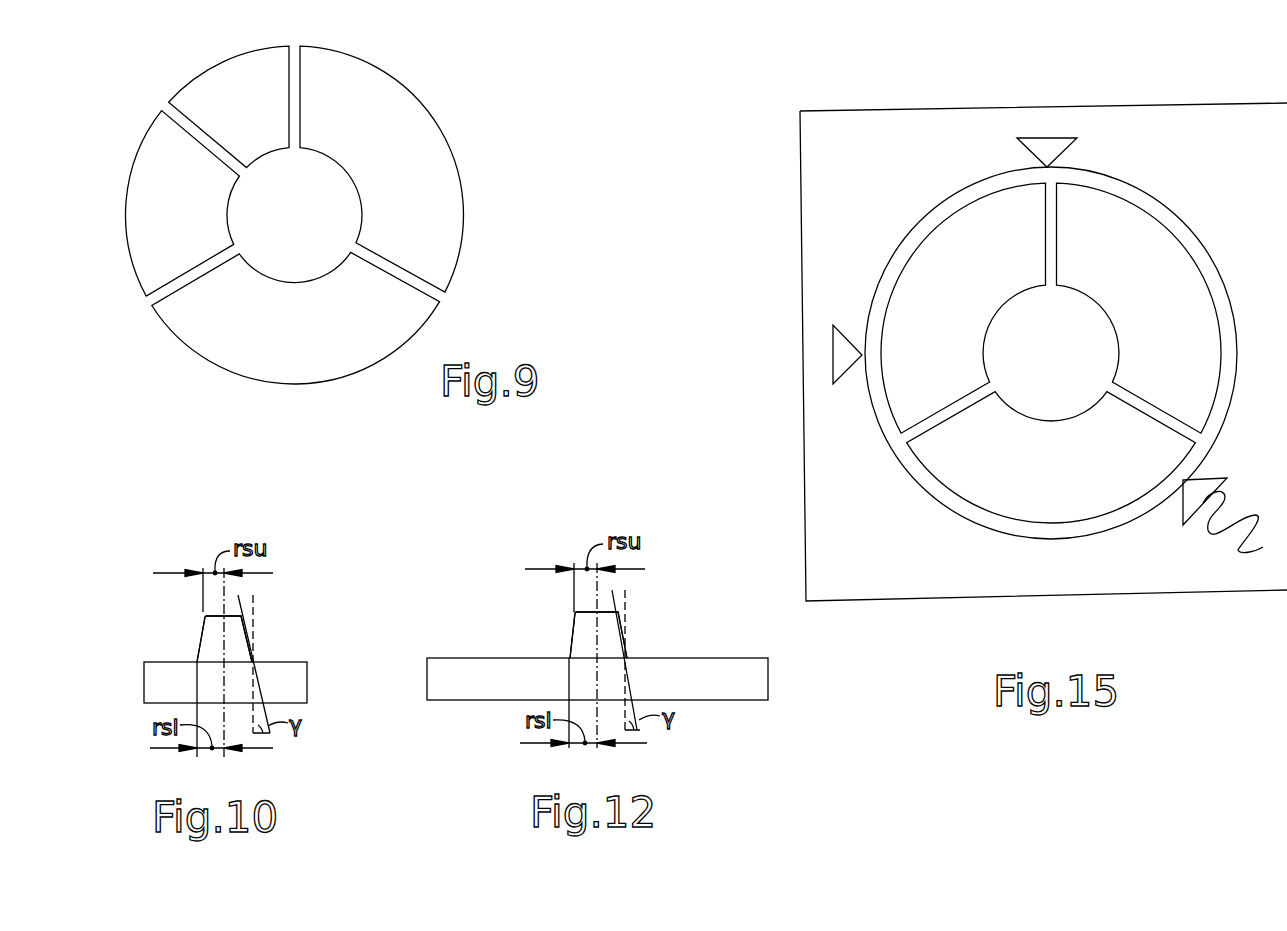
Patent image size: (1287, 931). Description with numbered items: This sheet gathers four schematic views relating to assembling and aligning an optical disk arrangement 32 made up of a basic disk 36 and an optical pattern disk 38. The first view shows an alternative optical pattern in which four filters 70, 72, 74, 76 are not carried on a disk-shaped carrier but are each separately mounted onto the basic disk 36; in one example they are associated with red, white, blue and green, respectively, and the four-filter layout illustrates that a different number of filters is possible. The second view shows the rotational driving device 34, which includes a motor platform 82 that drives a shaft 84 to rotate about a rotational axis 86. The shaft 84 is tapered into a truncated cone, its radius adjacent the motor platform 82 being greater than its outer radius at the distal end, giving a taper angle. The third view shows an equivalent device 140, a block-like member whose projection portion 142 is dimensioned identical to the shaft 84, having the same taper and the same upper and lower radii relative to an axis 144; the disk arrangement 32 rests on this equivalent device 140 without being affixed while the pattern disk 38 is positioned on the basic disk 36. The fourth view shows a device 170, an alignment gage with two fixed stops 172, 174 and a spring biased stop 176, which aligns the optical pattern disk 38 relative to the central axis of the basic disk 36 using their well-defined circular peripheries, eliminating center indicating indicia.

In FIG. 9, the filter 70 is at (227, 355).
In FIG. 9, the filter 72 is at (455, 229).
In FIG. 9, the filter 74 is at (205, 83).
In FIG. 9, the filter 76 is at (140, 175).
In FIG. 10, the rotational driving device 34 is at (123, 661).
In FIG. 10, the motor platform 82 is at (153, 682).
In FIG. 10, the shaft 84 is at (242, 645).
In FIG. 10, the rotational axis 86 is at (220, 635).
In FIG. 12, the equivalent device 140 is at (467, 647).
In FIG. 12, the projection portion 142 is at (615, 638).
In FIG. 12, the axis 144 is at (590, 630).
In FIG. 15, the device 170 is at (892, 97).
In FIG. 15, the disk arrangement 32 is at (1197, 215).
In FIG. 15, the optical pattern disk 38 is at (1100, 182).
In FIG. 15, the basic disk 36 is at (1200, 151).
In FIG. 15, the fixed stop 172 is at (1053, 145).
In FIG. 15, the fixed stop 174 is at (862, 357).
In FIG. 15, the spring biased stop 176 is at (1188, 497).